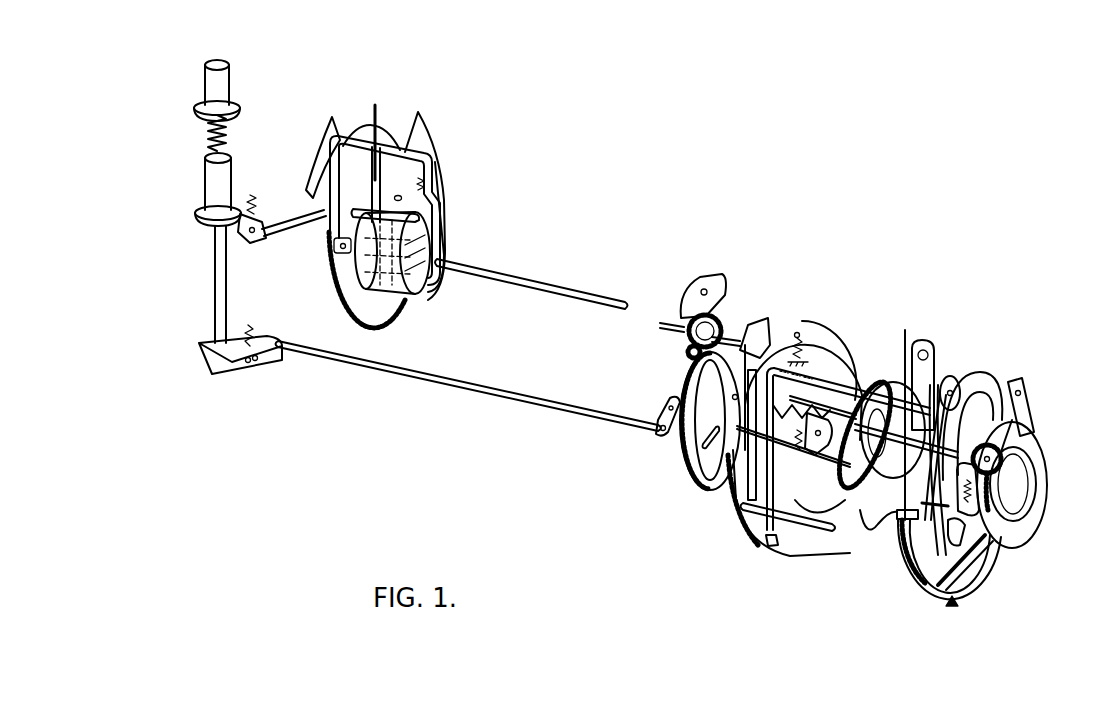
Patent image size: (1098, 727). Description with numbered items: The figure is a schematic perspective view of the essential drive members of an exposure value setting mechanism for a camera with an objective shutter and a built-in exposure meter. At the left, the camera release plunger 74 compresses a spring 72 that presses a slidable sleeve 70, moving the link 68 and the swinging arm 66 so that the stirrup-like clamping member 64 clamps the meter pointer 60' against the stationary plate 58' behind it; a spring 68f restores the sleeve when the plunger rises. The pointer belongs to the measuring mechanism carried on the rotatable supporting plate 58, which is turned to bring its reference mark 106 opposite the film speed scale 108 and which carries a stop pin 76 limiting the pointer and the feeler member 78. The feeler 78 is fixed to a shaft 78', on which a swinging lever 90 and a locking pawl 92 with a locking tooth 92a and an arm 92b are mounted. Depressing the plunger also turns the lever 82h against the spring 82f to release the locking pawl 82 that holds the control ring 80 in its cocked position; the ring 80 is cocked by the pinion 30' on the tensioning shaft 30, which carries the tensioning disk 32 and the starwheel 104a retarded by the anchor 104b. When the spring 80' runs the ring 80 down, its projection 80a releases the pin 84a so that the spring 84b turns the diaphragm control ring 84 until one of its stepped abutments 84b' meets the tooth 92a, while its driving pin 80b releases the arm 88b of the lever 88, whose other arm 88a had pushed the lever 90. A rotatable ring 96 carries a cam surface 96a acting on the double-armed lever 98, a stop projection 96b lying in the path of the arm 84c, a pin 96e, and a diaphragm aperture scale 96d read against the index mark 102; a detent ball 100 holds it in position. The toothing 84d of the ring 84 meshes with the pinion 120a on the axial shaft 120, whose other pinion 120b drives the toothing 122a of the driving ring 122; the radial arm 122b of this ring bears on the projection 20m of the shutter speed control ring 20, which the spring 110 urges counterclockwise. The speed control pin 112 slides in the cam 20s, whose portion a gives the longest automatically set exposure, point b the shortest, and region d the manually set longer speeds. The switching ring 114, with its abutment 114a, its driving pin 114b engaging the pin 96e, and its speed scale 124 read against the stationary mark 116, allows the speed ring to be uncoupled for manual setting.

The shutter speed control cam ring 20 is at (978, 375).
The forwardly turned projection 20m is at (937, 573).
The speed control cam 20s is at (940, 530).
The tensioning shaft 30 is at (675, 331).
The pinion 30' is at (664, 362).
The tensioning disk 32 is at (953, 380).
The supporting plate 58 is at (373, 241).
The pawl 58' is at (315, 154).
The pointer 60' is at (367, 126).
The clamping member 64 is at (392, 132).
The swinging arm 66 is at (359, 210).
The link 68 is at (246, 235).
The spring 68f is at (256, 206).
The slidable sleeve 70 is at (212, 188).
The spring 72 is at (210, 138).
The release plunger 74 is at (208, 89).
The stop pin 76 is at (352, 220).
The feeler member 78 is at (457, 227).
The shaft 78' is at (663, 302).
The control ring 80 is at (694, 421).
The spring 80' is at (657, 509).
The projection 80a is at (704, 419).
The driving pin 80b is at (714, 420).
The locking pawl 82 is at (472, 387).
The restoring spring 82f is at (250, 327).
The lever 82h is at (250, 372).
The diaphragm control ring 84 is at (873, 522).
The pin 84a is at (780, 455).
The spring 84b is at (798, 449).
The stepped abutments 84b' is at (933, 430).
The arm 84c is at (757, 512).
The toothing 84d is at (857, 415).
The swinging lever 88 is at (778, 445).
The arm 88a is at (767, 360).
The arm 88b is at (700, 450).
The swinging lever 90 is at (806, 330).
The locking pawl 92 is at (921, 345).
The locking tooth 92a is at (938, 405).
The arm 92b is at (818, 397).
The rotatable ring 96 is at (728, 485).
The cam surface 96a is at (814, 497).
The stop projection 96b is at (772, 542).
The diaphragm aperture scale 96d is at (748, 345).
The pin 96e is at (793, 464).
The double-armed lever 98 is at (818, 457).
The detent ball 100 is at (787, 352).
The index mark 102 is at (799, 302).
The starwheel 104a is at (688, 347).
The anchor 104b is at (690, 300).
The reference mark 106 is at (350, 310).
The film speed scale 108 is at (378, 340).
The spring 110 is at (985, 484).
The shutter speed control pin 112 is at (926, 503).
The switching ring 114 is at (968, 584).
The switching abutment 114a is at (987, 568).
The driving pin 114b is at (833, 510).
The stationary mark 116 is at (952, 612).
The shaft 120 is at (888, 425).
The pinion 120a is at (872, 362).
The pinion 120b is at (990, 458).
The driving ring 122 is at (1020, 510).
The toothing 122a is at (1013, 413).
The radial arm 122b is at (950, 587).
The shutter speed scale 124 is at (1022, 410).
The cam portion a is at (956, 531).
The cam point b is at (968, 489).
The cam region d is at (975, 537).